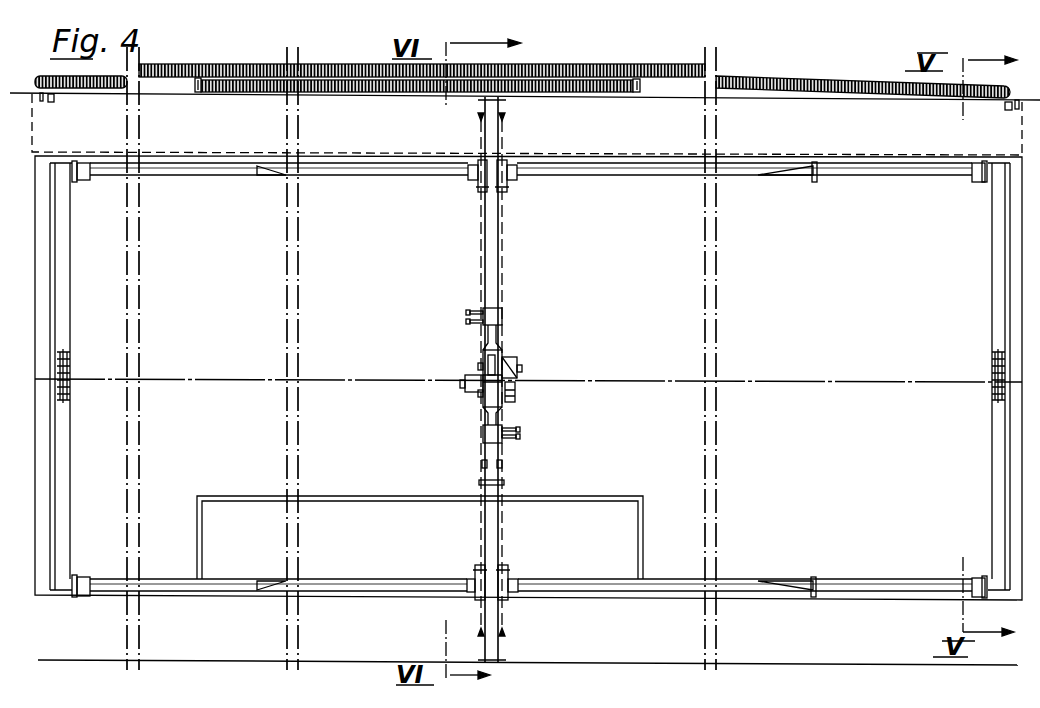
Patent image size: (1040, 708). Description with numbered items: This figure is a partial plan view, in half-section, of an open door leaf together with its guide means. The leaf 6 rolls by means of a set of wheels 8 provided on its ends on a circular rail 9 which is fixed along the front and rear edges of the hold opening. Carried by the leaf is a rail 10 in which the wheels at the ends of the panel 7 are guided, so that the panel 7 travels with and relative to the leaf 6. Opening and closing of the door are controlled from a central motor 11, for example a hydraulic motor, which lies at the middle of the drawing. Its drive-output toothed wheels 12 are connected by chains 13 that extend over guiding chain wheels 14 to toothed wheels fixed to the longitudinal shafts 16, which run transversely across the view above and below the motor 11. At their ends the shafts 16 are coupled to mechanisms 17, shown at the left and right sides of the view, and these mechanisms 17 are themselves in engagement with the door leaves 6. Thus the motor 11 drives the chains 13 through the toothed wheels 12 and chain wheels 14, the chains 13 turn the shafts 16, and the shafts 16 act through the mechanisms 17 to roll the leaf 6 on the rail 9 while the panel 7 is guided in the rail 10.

The leaf 6 is at (366, 62).
The panel 7 is at (399, 93).
The set of wheels 8 is at (47, 102).
The circular rail 9 is at (54, 100).
The rail 10 is at (197, 86).
The central motor 11 is at (492, 386).
The drive-output toothed wheel 12 is at (480, 366).
The chain 13 is at (481, 268).
The guiding chain wheel 14 is at (505, 120).
The longitudinal shaft 16 is at (432, 176).
The mechanism 17 is at (64, 202).